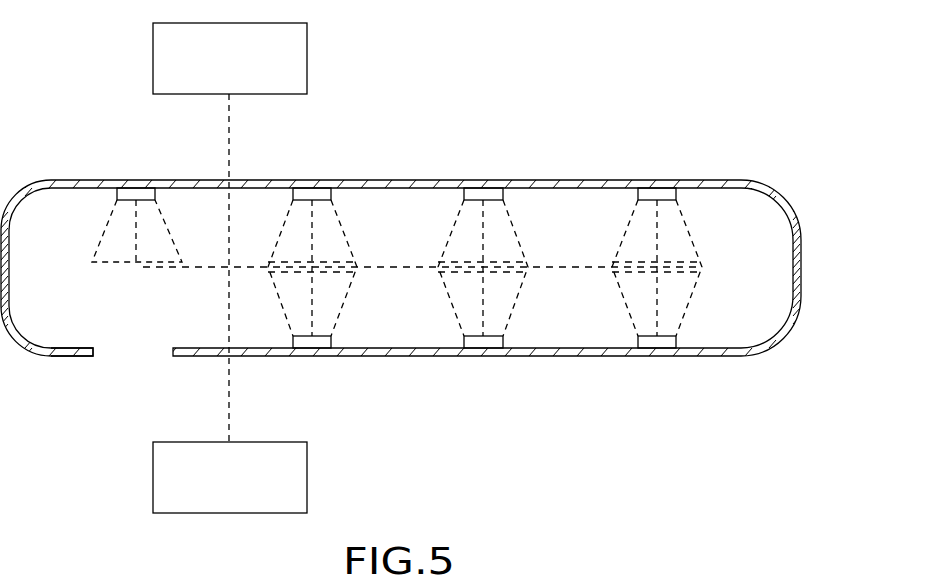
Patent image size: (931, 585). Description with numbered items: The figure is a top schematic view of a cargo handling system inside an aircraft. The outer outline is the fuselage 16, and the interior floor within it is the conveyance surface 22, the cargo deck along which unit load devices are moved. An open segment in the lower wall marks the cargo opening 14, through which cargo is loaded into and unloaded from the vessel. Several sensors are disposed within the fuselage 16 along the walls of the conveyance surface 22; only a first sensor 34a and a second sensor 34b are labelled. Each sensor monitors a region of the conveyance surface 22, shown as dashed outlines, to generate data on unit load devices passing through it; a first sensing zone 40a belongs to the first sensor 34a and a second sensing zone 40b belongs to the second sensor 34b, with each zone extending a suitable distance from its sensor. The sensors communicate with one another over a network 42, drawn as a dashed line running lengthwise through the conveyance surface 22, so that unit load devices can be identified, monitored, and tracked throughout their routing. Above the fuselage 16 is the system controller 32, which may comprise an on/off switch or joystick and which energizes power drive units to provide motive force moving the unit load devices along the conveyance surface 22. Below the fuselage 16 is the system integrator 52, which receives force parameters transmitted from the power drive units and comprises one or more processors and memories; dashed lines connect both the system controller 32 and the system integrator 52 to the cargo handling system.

The cargo opening 14 is at (136, 352).
The fuselage 16 is at (801, 245).
The conveyance surface 22 is at (62, 306).
The system controller 32 is at (308, 44).
The first sensor 34a is at (316, 188).
The second sensor 34b is at (487, 188).
The first sensing zone 40a is at (344, 237).
The second sensing zone 40b is at (517, 238).
The network 42 is at (562, 268).
The system integrator 52 is at (308, 457).